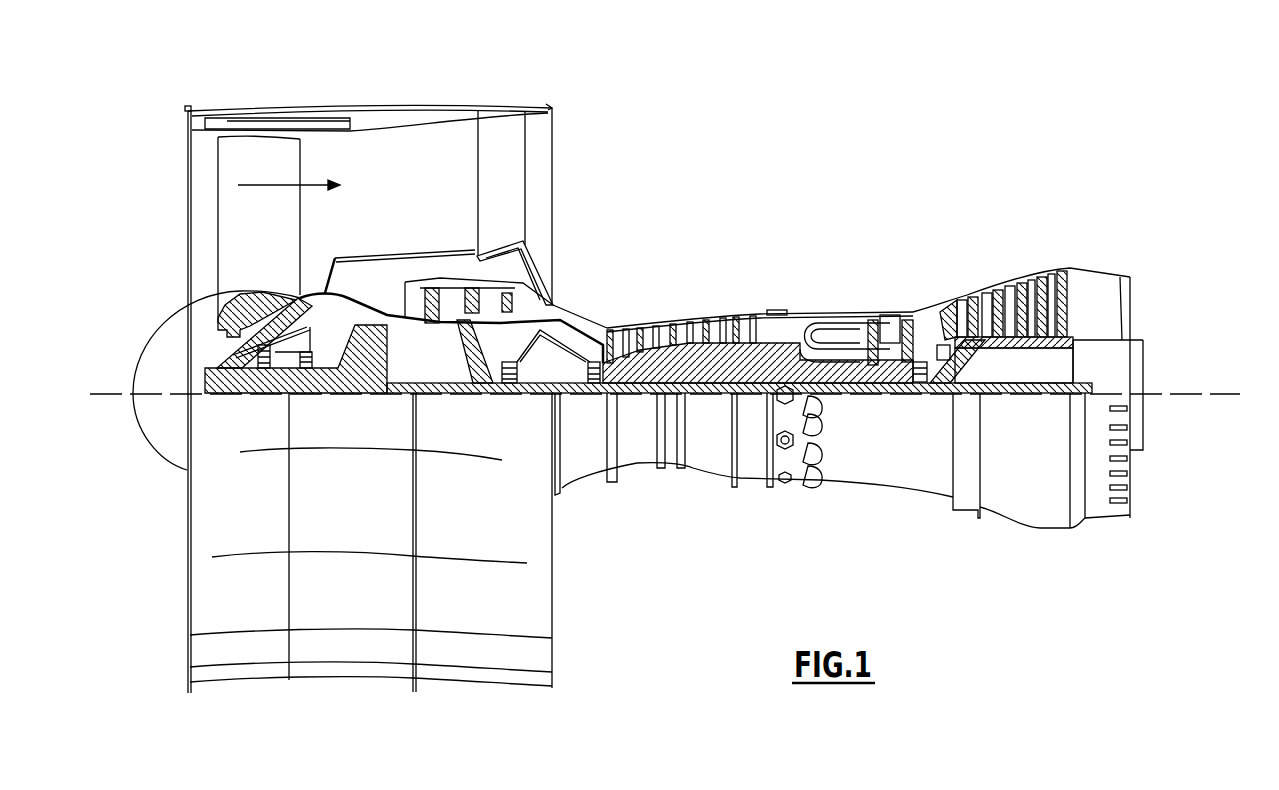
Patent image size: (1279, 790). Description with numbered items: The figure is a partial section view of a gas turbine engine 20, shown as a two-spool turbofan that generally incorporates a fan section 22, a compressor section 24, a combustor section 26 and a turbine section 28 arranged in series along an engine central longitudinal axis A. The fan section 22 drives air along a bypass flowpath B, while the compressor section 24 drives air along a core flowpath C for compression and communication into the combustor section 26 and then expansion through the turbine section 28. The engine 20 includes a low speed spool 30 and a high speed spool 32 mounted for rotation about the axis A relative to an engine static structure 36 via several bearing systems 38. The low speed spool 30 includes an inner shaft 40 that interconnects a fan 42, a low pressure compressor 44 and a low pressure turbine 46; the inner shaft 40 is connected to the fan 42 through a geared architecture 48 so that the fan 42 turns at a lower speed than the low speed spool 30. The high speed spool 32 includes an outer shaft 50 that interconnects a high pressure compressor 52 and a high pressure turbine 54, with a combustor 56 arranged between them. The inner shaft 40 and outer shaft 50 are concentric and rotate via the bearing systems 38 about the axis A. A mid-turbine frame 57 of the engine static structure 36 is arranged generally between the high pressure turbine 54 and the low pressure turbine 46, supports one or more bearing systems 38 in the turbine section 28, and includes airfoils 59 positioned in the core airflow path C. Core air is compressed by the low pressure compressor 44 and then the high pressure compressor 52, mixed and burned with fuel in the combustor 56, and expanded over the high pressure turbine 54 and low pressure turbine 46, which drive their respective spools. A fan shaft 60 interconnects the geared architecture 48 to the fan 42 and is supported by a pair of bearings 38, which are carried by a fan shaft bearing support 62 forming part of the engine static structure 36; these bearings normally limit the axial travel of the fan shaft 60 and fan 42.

The gas turbine engine 20 is at (834, 156).
The fan section 22 is at (300, 98).
The compressor section 24 is at (755, 315).
The combustor section 26 is at (867, 298).
The turbine section 28 is at (1028, 356).
The low speed spool 30 is at (710, 402).
The high speed spool 32 is at (753, 347).
The engine static structure 36 is at (750, 490).
The bearing systems 38 is at (282, 394).
The inner shaft 40 is at (572, 395).
The fan 42 is at (241, 241).
The low pressure compressor section 44 is at (487, 293).
The low pressure turbine section 46 is at (1018, 275).
The geared architecture 48 is at (377, 394).
The outer shaft 50 is at (837, 394).
The high pressure compressor section 52 is at (683, 363).
The high pressure turbine section 54 is at (888, 313).
The combustor 56 is at (823, 337).
The mid-turbine frame 57 is at (942, 296).
The airfoils 59 is at (953, 357).
The fan shaft 60 is at (313, 395).
The fan shaft bearing support 62 is at (238, 291).
The engine central longitudinal axis A is at (1223, 393).
The bypass flowpath B is at (278, 185).
The core flowpath C is at (366, 287).